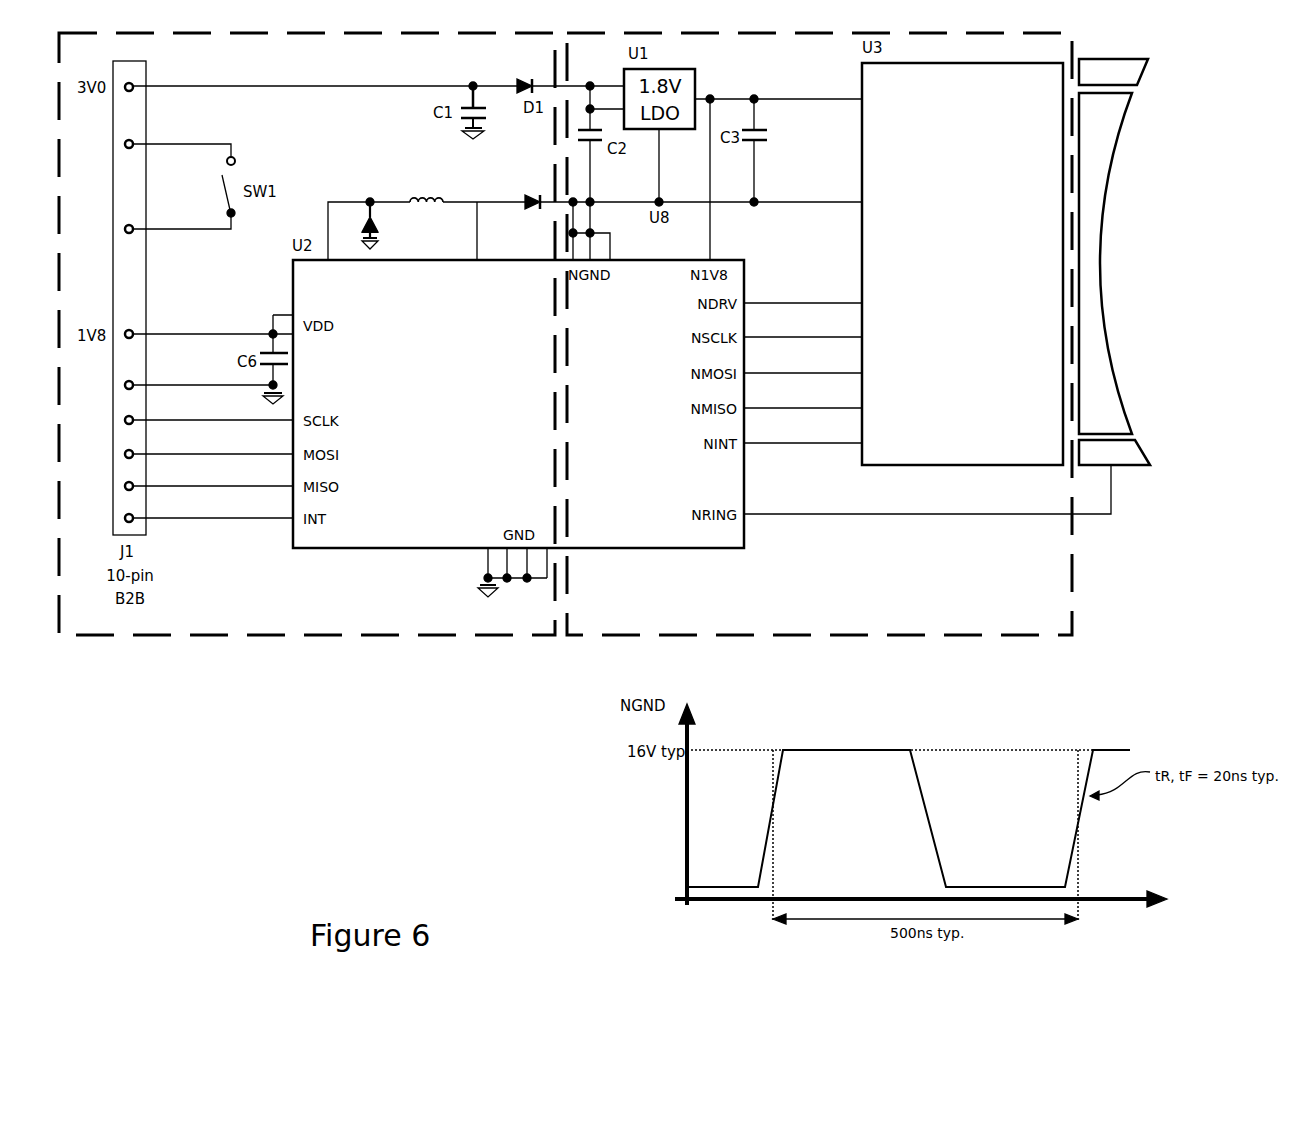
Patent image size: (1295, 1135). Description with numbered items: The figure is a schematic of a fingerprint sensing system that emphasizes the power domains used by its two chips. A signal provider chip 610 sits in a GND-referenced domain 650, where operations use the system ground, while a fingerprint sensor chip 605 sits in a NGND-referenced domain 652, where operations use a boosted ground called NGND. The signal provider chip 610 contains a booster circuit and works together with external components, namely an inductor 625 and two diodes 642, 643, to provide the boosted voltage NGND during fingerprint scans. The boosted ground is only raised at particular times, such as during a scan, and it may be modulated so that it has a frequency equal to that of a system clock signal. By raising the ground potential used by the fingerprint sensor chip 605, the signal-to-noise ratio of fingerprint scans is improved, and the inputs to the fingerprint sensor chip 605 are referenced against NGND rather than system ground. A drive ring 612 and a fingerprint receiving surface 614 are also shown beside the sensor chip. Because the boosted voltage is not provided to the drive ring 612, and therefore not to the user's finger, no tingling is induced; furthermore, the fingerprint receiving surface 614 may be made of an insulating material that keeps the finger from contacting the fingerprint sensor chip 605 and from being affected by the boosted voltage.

The fingerprint sensor chip 605 is at (975, 467).
The signal provider chip 610 is at (445, 550).
The drive ring 612 is at (1140, 455).
The fingerprint receiving surface 614 is at (1118, 399).
The inductor 625 is at (425, 192).
The diode 642 is at (382, 228).
The diode 643 is at (521, 193).
The GND-referenced domain 650 is at (143, 636).
The NGND-referenced domain 652 is at (698, 636).